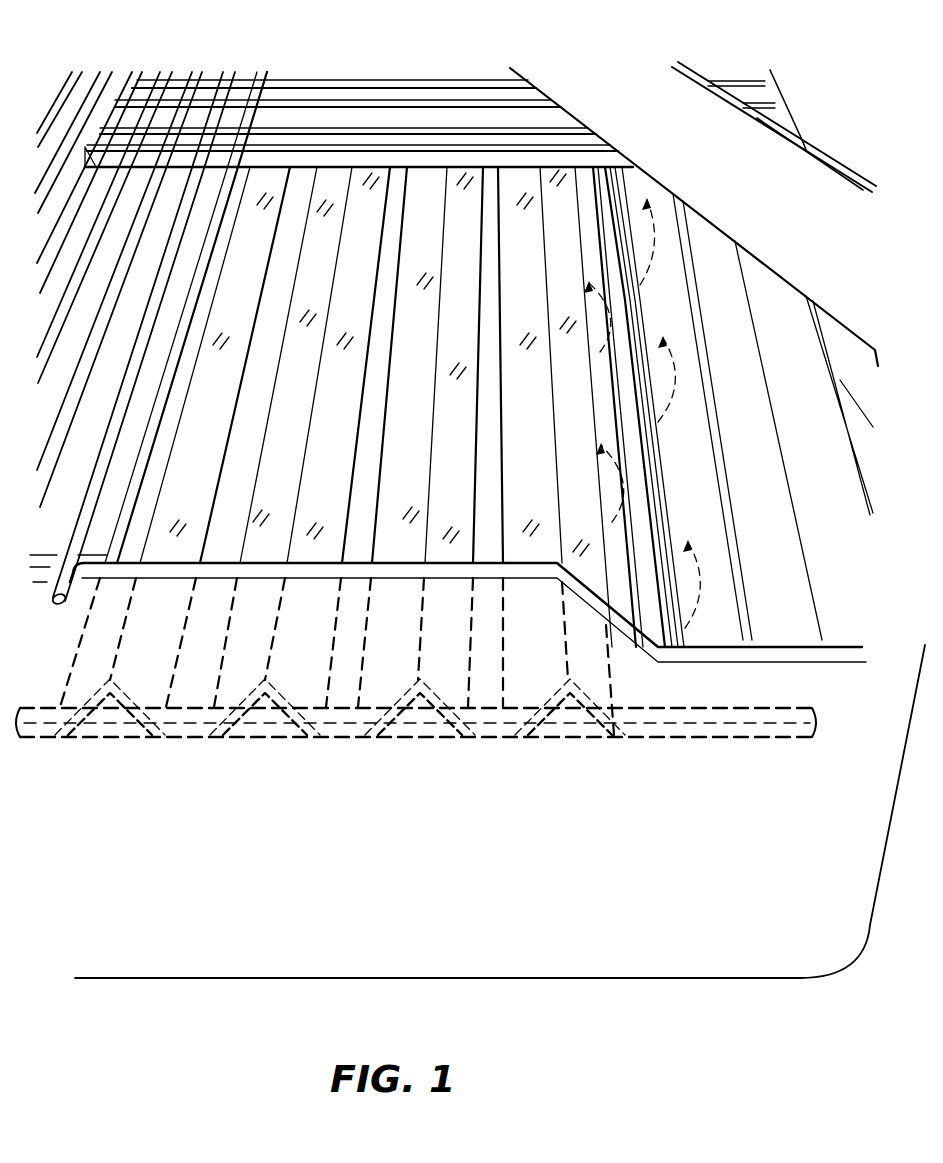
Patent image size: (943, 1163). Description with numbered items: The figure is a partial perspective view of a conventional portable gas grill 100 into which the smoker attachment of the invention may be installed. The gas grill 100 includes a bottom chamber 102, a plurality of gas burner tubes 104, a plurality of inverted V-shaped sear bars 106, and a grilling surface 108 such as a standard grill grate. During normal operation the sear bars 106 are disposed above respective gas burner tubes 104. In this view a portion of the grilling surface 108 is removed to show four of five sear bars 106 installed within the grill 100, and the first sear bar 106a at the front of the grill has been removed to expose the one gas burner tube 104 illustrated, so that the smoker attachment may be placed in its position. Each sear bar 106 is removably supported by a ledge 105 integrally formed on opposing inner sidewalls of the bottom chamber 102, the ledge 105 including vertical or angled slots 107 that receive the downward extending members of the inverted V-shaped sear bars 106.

The gas grill 100 is at (795, 1012).
The bottom chamber 102 is at (623, 957).
The gas burner tube 104 is at (598, 165).
The ledge 105 is at (172, 752).
The sear bars 106 is at (338, 193).
The first sear bar 106a is at (732, 160).
The slots 107 is at (128, 717).
The grilling surface 108 is at (362, 120).